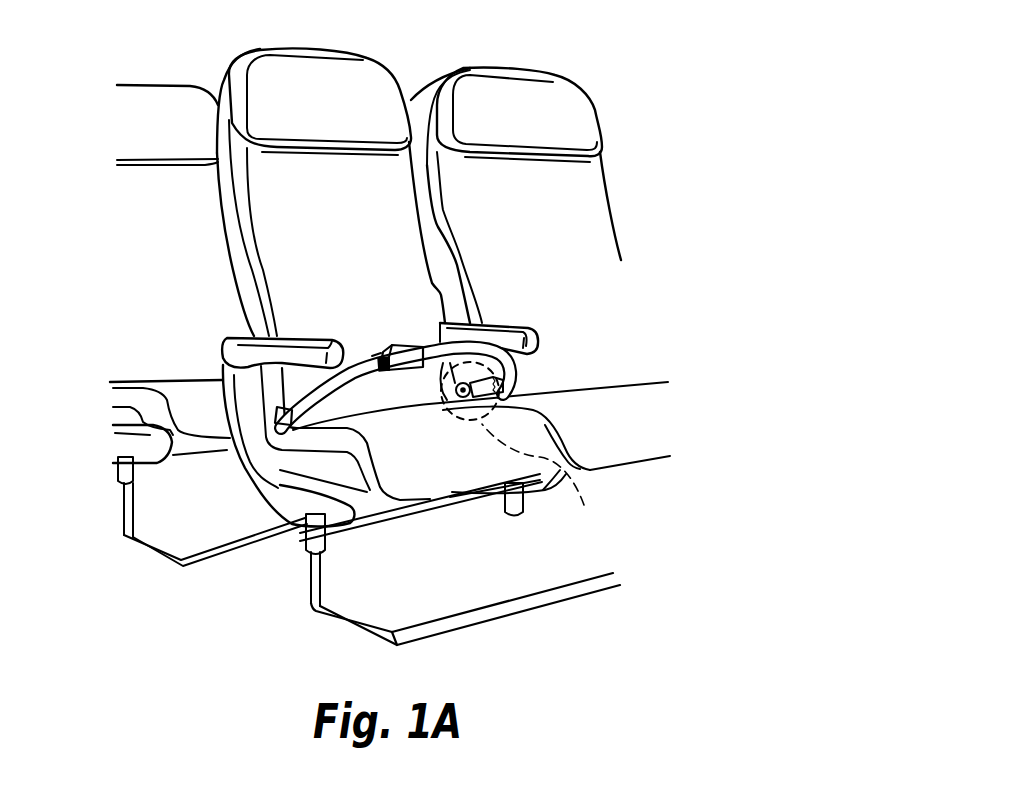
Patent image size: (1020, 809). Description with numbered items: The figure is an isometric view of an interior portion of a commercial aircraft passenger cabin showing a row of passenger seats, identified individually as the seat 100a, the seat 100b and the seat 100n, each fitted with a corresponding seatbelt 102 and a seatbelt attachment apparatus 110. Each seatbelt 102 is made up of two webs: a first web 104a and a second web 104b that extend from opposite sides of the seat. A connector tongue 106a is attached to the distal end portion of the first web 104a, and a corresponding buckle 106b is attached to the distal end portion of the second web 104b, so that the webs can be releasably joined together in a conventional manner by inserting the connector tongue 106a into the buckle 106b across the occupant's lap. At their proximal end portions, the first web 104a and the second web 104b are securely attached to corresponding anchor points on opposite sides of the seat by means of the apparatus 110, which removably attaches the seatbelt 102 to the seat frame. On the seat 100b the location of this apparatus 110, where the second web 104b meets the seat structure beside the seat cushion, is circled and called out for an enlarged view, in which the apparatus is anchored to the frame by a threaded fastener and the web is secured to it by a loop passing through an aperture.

The seat 100a is at (146, 83).
The seat 100b is at (330, 50).
The seat 100n is at (540, 72).
The seatbelt 102 is at (308, 394).
The first web 104a is at (255, 336).
The second web 104b is at (450, 355).
The connector tongue 106a is at (377, 352).
The buckle 106b is at (407, 347).
The apparatus 110 is at (445, 363).